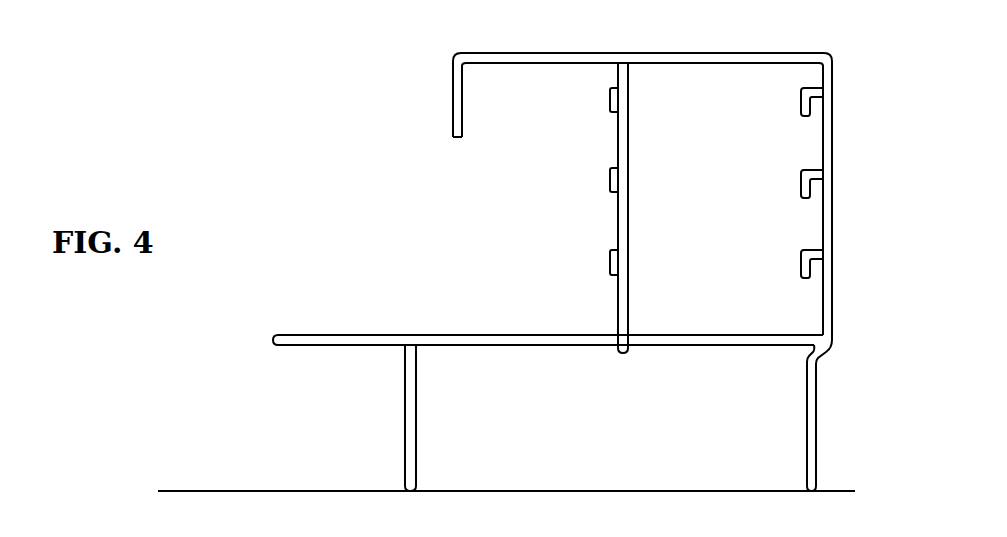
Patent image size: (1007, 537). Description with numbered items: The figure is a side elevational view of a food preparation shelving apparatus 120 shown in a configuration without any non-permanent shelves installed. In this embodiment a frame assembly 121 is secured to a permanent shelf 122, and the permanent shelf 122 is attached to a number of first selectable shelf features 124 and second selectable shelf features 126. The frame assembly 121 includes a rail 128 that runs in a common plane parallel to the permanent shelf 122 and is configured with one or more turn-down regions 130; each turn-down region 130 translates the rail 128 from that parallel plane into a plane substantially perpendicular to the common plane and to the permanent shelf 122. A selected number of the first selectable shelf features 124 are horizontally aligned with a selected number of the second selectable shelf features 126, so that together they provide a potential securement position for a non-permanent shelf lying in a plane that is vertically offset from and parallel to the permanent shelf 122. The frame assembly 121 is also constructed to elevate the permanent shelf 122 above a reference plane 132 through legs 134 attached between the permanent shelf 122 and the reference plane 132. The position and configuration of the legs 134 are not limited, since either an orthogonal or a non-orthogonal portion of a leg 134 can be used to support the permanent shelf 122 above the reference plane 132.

The food preparation shelving apparatus 120 is at (324, 77).
The frame assembly 121 is at (833, 223).
The permanent shelf 122 is at (458, 347).
The first selectable shelf features 124 is at (594, 183).
The second selectable shelf features 126 is at (785, 88).
The rail 128 is at (658, 52).
The turn-down region 130 is at (453, 115).
The reference plane 132 is at (227, 490).
The legs 134 is at (807, 430).